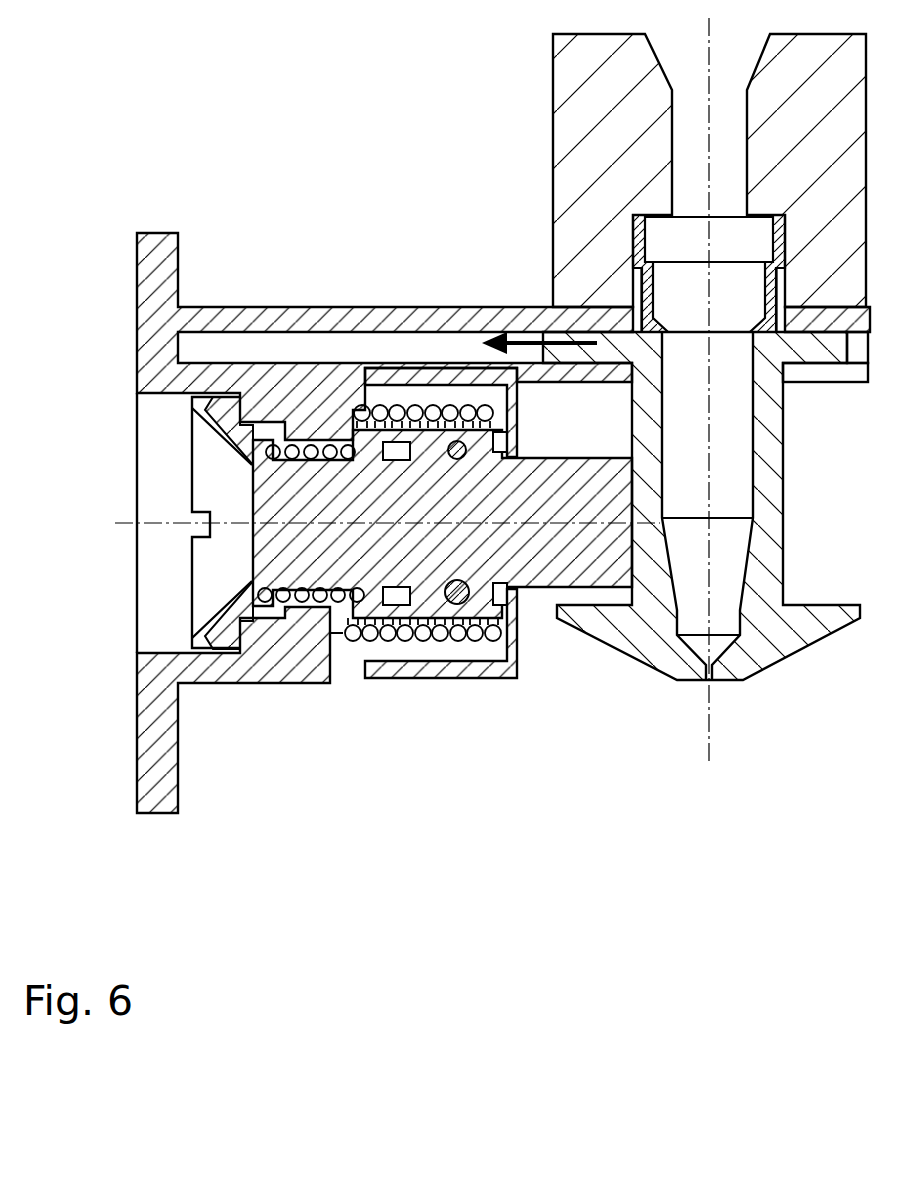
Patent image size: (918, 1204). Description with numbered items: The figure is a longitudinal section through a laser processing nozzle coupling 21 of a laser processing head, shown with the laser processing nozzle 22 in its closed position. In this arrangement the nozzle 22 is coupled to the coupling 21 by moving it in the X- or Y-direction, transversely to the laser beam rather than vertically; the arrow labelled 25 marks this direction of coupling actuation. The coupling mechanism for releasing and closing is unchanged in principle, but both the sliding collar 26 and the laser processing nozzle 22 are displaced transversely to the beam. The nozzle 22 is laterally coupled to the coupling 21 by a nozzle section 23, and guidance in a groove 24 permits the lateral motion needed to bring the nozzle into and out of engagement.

The laser processing nozzle coupling 21 is at (340, 238).
The laser processing nozzle 22 is at (772, 630).
The nozzle section 23 is at (540, 553).
The groove 24 is at (383, 343).
The direction of coupling actuation 25 is at (538, 343).
The sliding collar 26 is at (403, 667).